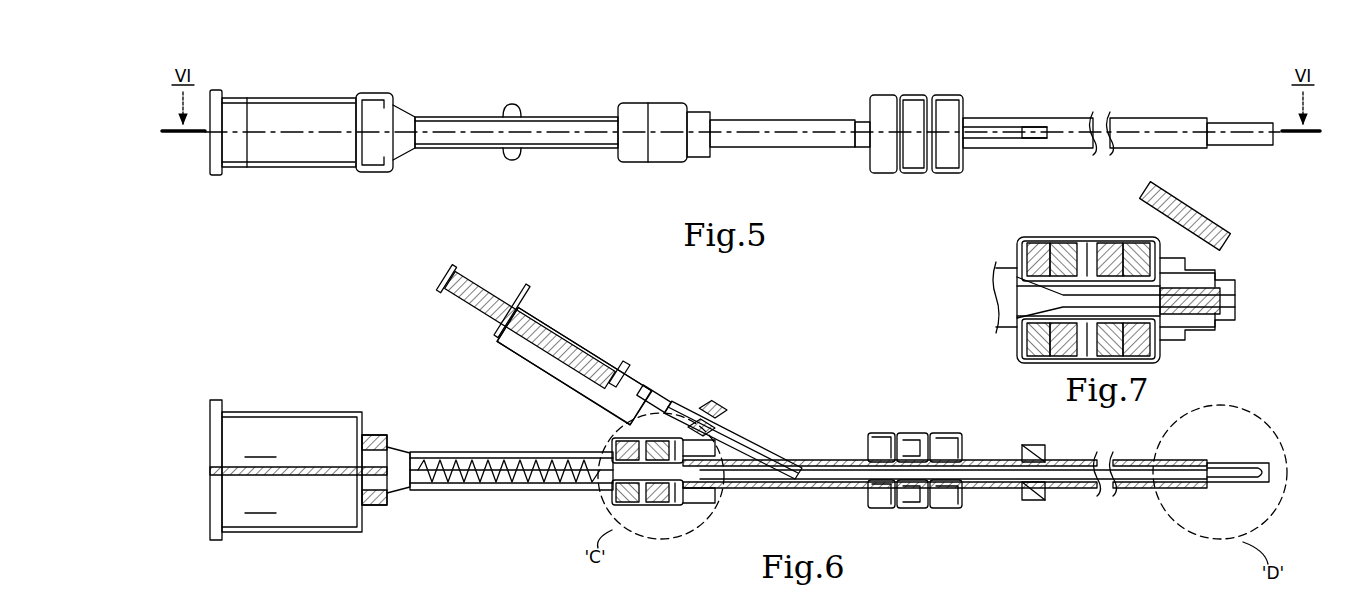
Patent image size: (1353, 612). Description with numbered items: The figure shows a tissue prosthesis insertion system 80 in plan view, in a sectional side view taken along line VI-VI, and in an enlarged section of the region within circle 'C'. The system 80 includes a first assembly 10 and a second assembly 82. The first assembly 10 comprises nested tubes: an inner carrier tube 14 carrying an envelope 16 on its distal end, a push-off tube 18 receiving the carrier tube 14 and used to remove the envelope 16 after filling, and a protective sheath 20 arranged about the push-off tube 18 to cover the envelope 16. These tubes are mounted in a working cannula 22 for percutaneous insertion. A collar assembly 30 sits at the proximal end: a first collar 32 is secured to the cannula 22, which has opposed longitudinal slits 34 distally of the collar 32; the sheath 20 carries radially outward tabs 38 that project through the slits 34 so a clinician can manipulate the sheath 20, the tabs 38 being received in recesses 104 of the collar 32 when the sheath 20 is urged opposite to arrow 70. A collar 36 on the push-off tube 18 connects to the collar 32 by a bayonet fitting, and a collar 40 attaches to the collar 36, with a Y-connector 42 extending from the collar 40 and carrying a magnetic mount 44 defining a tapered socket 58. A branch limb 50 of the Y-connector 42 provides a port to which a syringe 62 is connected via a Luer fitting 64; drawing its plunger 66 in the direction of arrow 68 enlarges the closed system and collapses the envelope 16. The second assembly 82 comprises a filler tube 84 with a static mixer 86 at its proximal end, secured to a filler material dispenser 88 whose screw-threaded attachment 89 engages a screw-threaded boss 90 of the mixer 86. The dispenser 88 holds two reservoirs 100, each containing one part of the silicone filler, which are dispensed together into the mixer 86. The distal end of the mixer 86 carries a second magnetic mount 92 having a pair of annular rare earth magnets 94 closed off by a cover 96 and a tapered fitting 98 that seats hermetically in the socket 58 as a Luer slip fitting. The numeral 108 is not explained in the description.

In FIG. 5, the first assembly 10 is at (1186, 104).
In FIG. 6, the first assembly 10 is at (1130, 510).
In FIG. 6, the carrier tube 14 is at (652, 611).
In FIG. 6, the envelope 16 is at (1256, 462).
In FIG. 6, the push-off tube 18 is at (528, 598).
In FIG. 6, the protective sheath 20 is at (1258, 484).
In FIG. 5, the working cannula 22 is at (1136, 117).
In FIG. 6, the working cannula 22 is at (1186, 460).
In FIG. 5, the collar assembly 30 is at (882, 93).
In FIG. 6, the collar assembly 30 is at (915, 470).
In FIG. 5, the first collar 32 is at (940, 94).
In FIG. 6, the first collar 32 is at (945, 509).
In FIG. 5, the slit 34 is at (980, 126).
In FIG. 5, the collar 36 is at (912, 94).
In FIG. 6, the collar 36 is at (912, 509).
In FIG. 5, the tabs 38 is at (1036, 126).
In FIG. 6, the tabs 38 is at (1046, 450).
In FIG. 5, the collar 40 is at (866, 160).
In FIG. 6, the collar 40 is at (868, 508).
In FIG. 5, the Y-connector 42 is at (782, 119).
In FIG. 7, the Y-connector 42 is at (1235, 320).
In FIG. 6, the Y-connector 42 is at (826, 459).
In FIG. 5, the magnetic mount 44 is at (666, 102).
In FIG. 7, the magnetic mount 44 is at (1078, 241).
In FIG. 6, the magnetic mount 44 is at (668, 506).
In FIG. 7, the branch limb 50 is at (1230, 252).
In FIG. 6, the branch limb 50 is at (757, 442).
In FIG. 7, the tapered socket 58 is at (1188, 330).
In FIG. 5, the syringe 62 is at (560, 114).
In FIG. 6, the syringe 62 is at (645, 356).
In FIG. 7, the Luer fitting 64 is at (1165, 216).
In FIG. 6, the Luer fitting 64 is at (720, 406).
In FIG. 6, the plunger 66 is at (462, 302).
In FIG. 6, the arrow 68 is at (500, 354).
In FIG. 6, the arrow 70 is at (1103, 507).
In FIG. 5, the tissue prosthesis insertion system 80 is at (1088, 104).
In FIG. 5, the second assembly 82 is at (462, 98).
In FIG. 6, the second assembly 82 is at (500, 505).
In FIG. 7, the filler tube 84 is at (1226, 302).
In FIG. 6, the filler tube 84 is at (780, 489).
In FIG. 5, the static mixer 86 is at (474, 150).
In FIG. 6, the static mixer 86 is at (590, 452).
In FIG. 5, the filler material dispenser 88 is at (310, 92).
In FIG. 6, the filler material dispenser 88 is at (268, 398).
In FIG. 6, the screw-threaded attachment 89 is at (396, 500).
In FIG. 6, the screw-threaded boss 90 is at (380, 435).
In FIG. 5, the second magnetic mount 92 is at (632, 163).
In FIG. 7, the second magnetic mount 92 is at (1020, 362).
In FIG. 6, the second magnetic mount 92 is at (614, 504).
In FIG. 7, the annular rare earth magnets 94 is at (1016, 258).
In FIG. 7, the cover 96 is at (1020, 240).
In FIG. 7, the tapered fitting 98 is at (1010, 300).
In FIG. 6, the reservoirs 100 is at (260, 475).
In FIG. 6, the recesses 104 is at (960, 446).
In FIG. 6, the distal component 108 is at (990, 606).